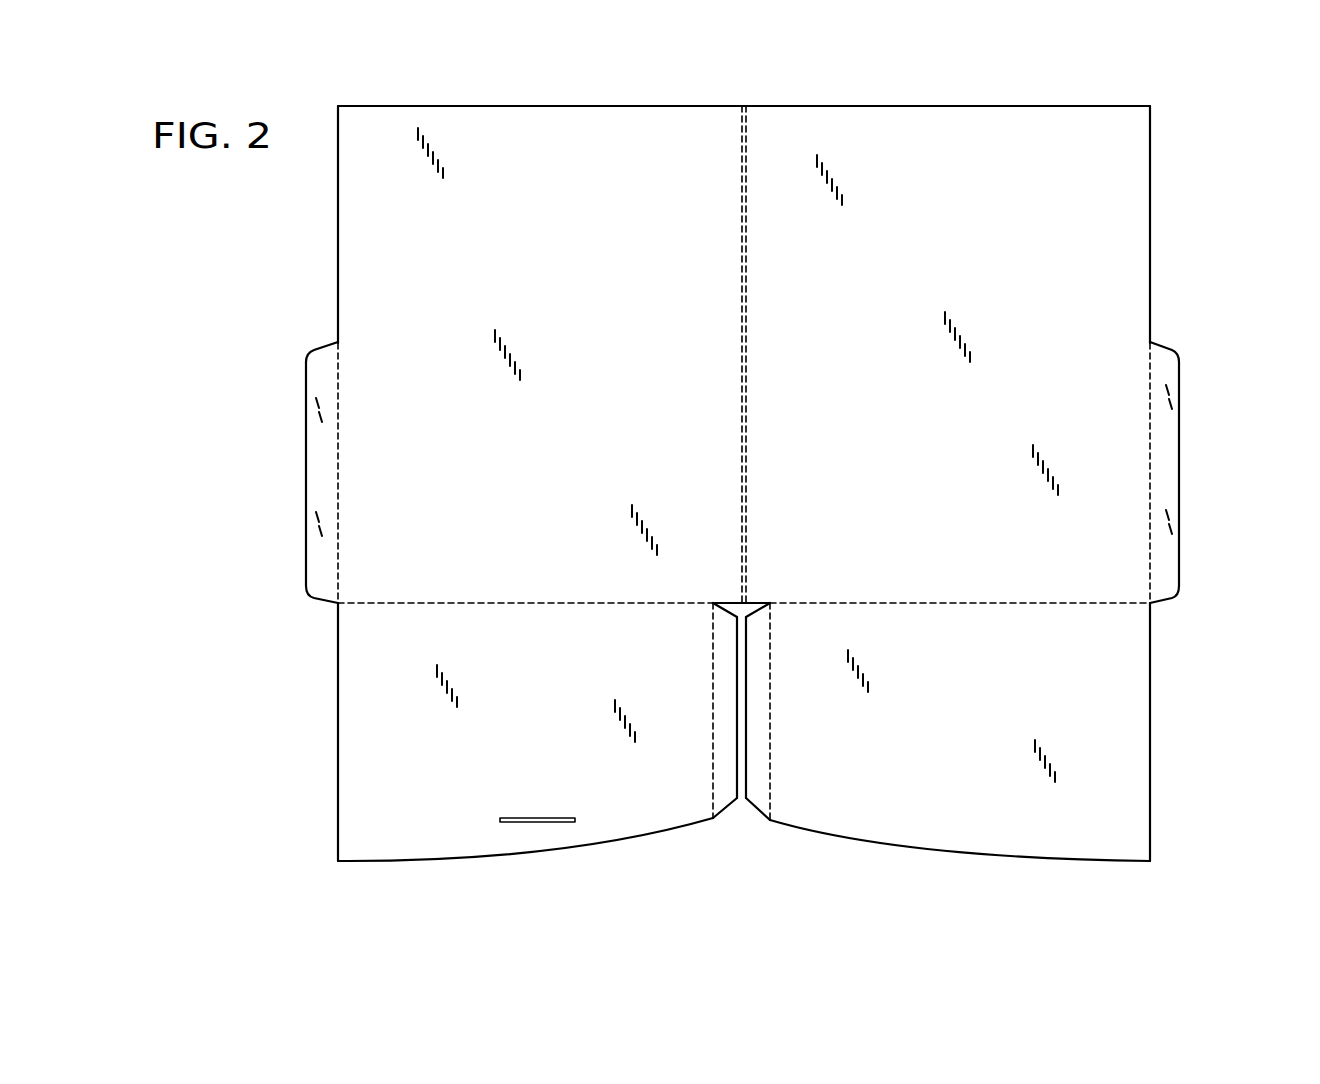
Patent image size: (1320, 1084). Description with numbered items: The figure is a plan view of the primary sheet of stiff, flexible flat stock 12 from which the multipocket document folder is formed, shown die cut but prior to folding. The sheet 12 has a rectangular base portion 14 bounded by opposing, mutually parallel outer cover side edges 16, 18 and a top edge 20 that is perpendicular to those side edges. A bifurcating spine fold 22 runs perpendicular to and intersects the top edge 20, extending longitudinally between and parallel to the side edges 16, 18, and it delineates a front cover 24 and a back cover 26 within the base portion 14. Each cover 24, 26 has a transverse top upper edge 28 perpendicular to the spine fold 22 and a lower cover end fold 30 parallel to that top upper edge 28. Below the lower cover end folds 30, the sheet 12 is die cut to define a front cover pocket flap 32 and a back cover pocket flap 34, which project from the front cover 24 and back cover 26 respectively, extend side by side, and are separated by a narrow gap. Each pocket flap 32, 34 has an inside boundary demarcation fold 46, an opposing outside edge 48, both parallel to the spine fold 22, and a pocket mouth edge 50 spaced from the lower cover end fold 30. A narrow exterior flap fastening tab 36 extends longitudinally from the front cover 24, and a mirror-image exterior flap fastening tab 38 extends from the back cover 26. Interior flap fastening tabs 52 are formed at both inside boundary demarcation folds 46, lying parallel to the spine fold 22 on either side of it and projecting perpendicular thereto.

The primary sheet of stiff, flexible flat stock 12 is at (266, 689).
The rectangular base portion 14 is at (332, 276).
The outer cover side edge 16 is at (336, 230).
The outer cover side edge 18 is at (1152, 253).
The top edge 20 is at (644, 97).
The spine fold 22 is at (745, 338).
The front cover 24 is at (544, 306).
The back cover 26 is at (966, 306).
The top upper edge 28 is at (508, 103).
The lower cover end fold 30 is at (490, 605).
The front cover pocket flap 32 is at (552, 714).
The back cover pocket flap 34 is at (978, 714).
The exterior flap fastening tab 36 is at (312, 448).
The exterior flap fastening tab 38 is at (1168, 450).
The inside boundary demarcation fold 46 is at (710, 763).
The outside edge 48 is at (333, 778).
The pocket mouth edge 50 is at (545, 852).
The interior flap fastening tab 52 is at (727, 725).